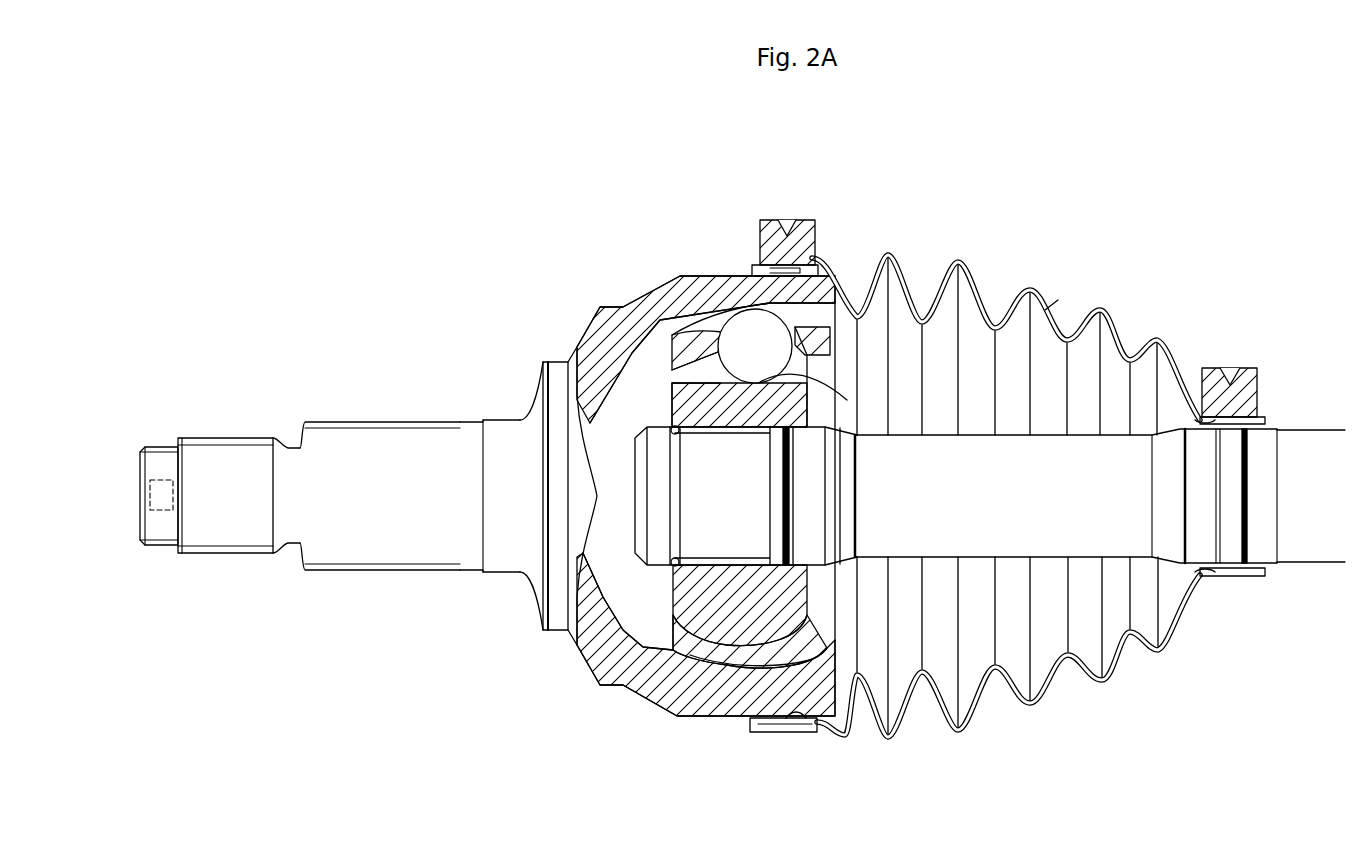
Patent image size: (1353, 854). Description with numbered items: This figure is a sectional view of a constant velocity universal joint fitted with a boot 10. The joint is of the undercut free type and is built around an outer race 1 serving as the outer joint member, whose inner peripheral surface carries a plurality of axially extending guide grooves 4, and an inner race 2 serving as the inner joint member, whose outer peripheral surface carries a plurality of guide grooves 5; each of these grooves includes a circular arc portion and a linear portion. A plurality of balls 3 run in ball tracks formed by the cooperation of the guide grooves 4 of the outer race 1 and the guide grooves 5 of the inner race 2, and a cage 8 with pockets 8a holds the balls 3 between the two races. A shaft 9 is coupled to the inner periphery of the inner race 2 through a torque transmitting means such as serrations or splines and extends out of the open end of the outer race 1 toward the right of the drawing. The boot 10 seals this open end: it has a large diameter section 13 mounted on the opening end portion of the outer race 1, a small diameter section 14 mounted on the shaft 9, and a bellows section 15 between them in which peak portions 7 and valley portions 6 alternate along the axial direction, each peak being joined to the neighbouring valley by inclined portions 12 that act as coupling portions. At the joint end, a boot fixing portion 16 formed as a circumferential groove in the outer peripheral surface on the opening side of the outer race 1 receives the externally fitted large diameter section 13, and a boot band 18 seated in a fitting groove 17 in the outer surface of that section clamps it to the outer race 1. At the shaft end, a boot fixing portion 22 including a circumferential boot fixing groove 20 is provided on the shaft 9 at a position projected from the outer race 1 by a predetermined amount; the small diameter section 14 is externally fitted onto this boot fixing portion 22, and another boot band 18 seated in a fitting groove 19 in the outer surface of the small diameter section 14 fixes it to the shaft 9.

The outer race 1 is at (652, 302).
The inner race 2 is at (683, 590).
The balls 3 is at (745, 323).
The guide grooves 4 is at (703, 320).
The guide grooves 5 is at (803, 373).
The valley portions 6 is at (857, 320).
The peak portions 7 is at (888, 253).
The cage 8 is at (720, 655).
The pockets 8a is at (740, 317).
The shaft 9 is at (930, 559).
The boot 10 is at (1006, 457).
The inclined portions 12 is at (866, 710).
The large diameter section 13 is at (797, 218).
The small diameter section 14 is at (1216, 366).
The bellows section 15 is at (1058, 300).
The boot fixing portion 16 is at (795, 731).
The fitting groove 17 is at (768, 733).
The boot band 18 is at (1247, 366).
The fitting groove 19 is at (1255, 405).
The boot fixing groove 20 is at (1235, 465).
The boot fixing portion 22 is at (1237, 520).